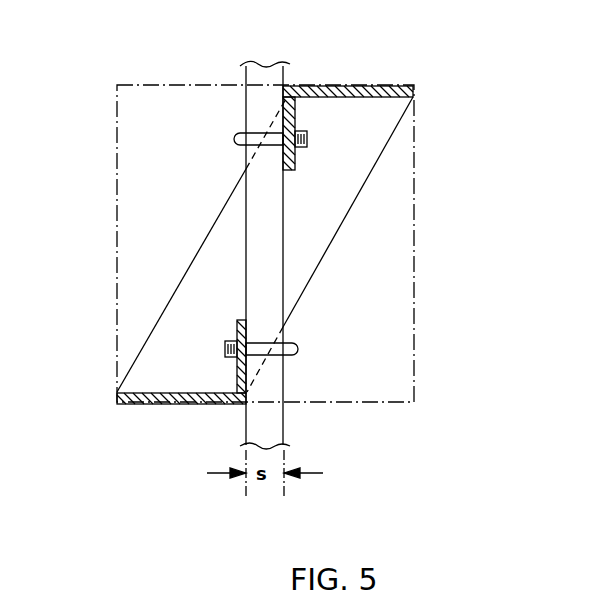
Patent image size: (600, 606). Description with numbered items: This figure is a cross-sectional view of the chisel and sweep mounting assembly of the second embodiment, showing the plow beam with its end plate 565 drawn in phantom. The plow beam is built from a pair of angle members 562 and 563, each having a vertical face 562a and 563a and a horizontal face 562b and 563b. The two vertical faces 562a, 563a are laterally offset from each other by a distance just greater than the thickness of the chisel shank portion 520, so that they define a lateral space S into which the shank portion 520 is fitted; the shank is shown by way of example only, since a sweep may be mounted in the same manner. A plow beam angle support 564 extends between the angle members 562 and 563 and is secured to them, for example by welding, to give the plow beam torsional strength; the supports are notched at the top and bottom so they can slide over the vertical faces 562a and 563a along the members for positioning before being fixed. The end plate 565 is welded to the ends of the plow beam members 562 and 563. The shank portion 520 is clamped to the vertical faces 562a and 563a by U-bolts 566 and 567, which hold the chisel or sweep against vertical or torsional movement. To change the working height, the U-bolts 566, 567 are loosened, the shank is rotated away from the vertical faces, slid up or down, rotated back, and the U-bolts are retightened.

The shank portion 520 is at (275, 277).
The angle member 562 is at (387, 92).
The vertical face 562a is at (296, 113).
The horizontal face 562b is at (335, 86).
The angle member 563 is at (140, 398).
The vertical face 563a is at (196, 356).
The horizontal face 563b is at (177, 405).
The plow beam angle support 564 is at (368, 184).
The end plate 565 is at (414, 338).
The U-bolt 566 is at (232, 139).
The U-bolt 567 is at (300, 349).